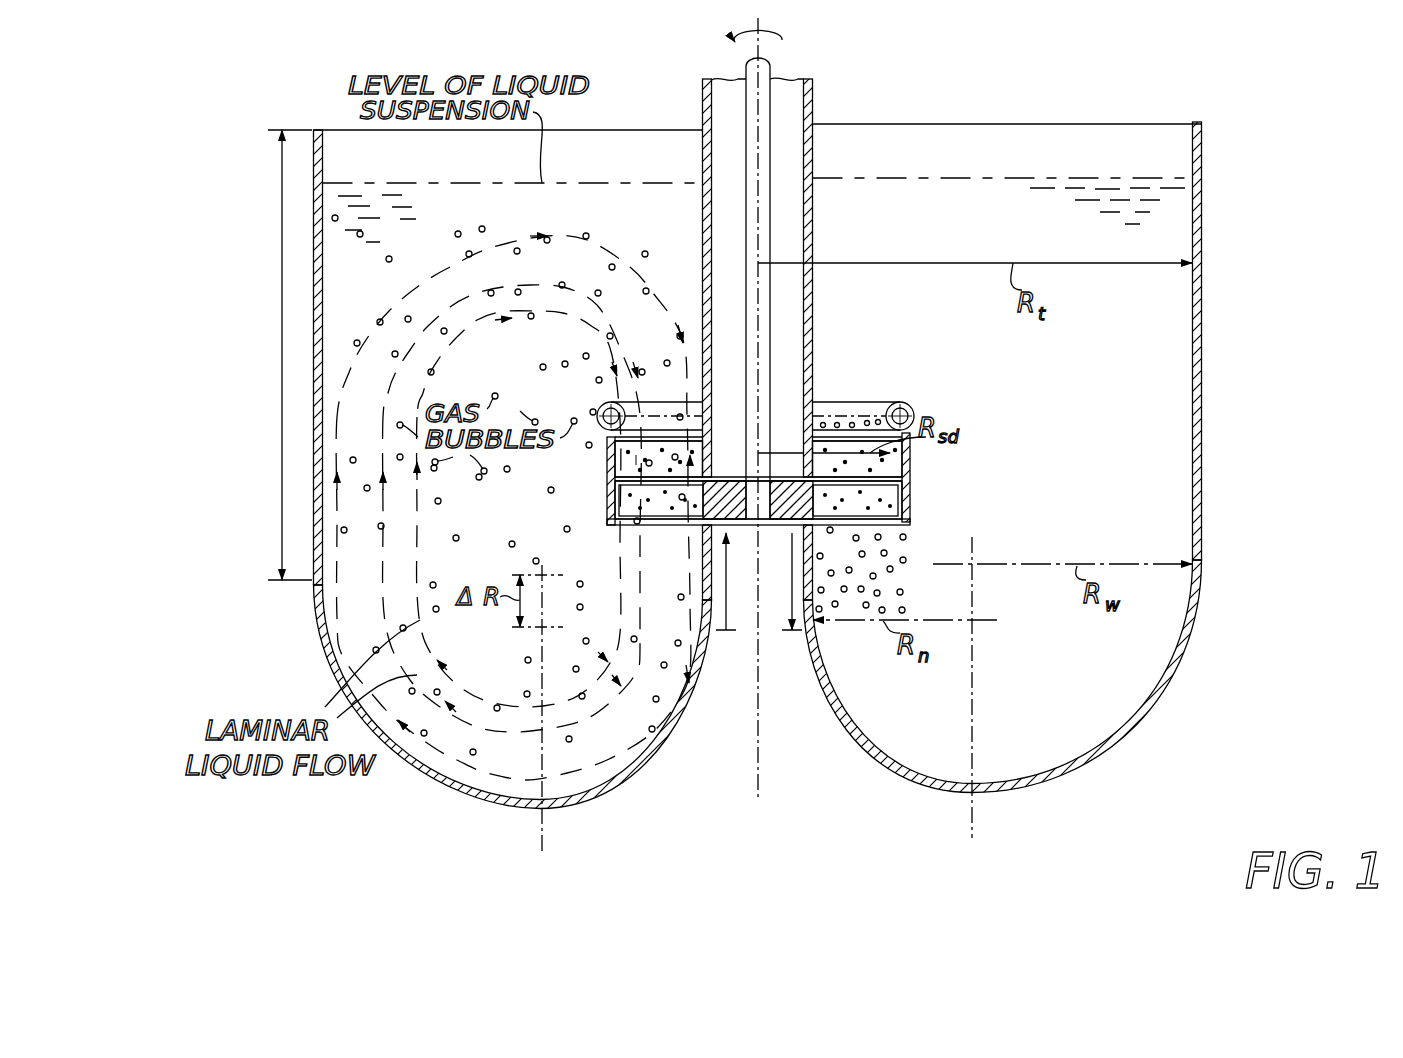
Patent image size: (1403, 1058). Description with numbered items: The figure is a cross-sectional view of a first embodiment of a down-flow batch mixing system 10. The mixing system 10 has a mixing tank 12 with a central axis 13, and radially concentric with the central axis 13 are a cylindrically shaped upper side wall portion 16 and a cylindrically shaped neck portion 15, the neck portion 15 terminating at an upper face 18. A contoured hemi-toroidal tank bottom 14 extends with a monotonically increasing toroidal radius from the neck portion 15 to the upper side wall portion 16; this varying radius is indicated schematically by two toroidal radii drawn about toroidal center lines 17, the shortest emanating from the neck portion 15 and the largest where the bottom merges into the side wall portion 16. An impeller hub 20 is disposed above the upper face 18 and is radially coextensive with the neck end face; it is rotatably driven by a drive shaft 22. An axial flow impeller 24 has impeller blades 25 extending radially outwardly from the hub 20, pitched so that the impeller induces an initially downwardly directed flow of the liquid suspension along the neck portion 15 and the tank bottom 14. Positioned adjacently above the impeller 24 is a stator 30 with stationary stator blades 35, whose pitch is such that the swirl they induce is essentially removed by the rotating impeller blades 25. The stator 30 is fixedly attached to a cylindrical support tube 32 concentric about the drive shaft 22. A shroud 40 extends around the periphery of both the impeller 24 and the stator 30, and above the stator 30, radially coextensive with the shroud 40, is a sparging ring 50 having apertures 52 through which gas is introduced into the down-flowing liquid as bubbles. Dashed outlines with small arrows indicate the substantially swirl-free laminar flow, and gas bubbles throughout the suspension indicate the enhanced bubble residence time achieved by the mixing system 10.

The mixing system 10 is at (350, 790).
The mixing tank 12 is at (1207, 462).
The central axis 13 is at (742, 42).
The hemi-toroidal tank bottom 14 is at (316, 614).
The neck portion 15 is at (790, 610).
The upper side wall portion 16 is at (282, 432).
The toroidal center lines 17 is at (543, 823).
The upper face of neck portion 18 is at (760, 527).
The impeller hub 20 is at (830, 508).
The drive shaft 22 is at (770, 63).
The axial flow impeller 24 is at (633, 520).
The impeller blades 25 is at (893, 500).
The stator 30 is at (912, 455).
The support tube 32 is at (812, 288).
The stator blades 35 is at (897, 466).
The shroud 40 is at (607, 466).
The sparging ring 50 is at (879, 400).
The apertures 52 is at (852, 420).